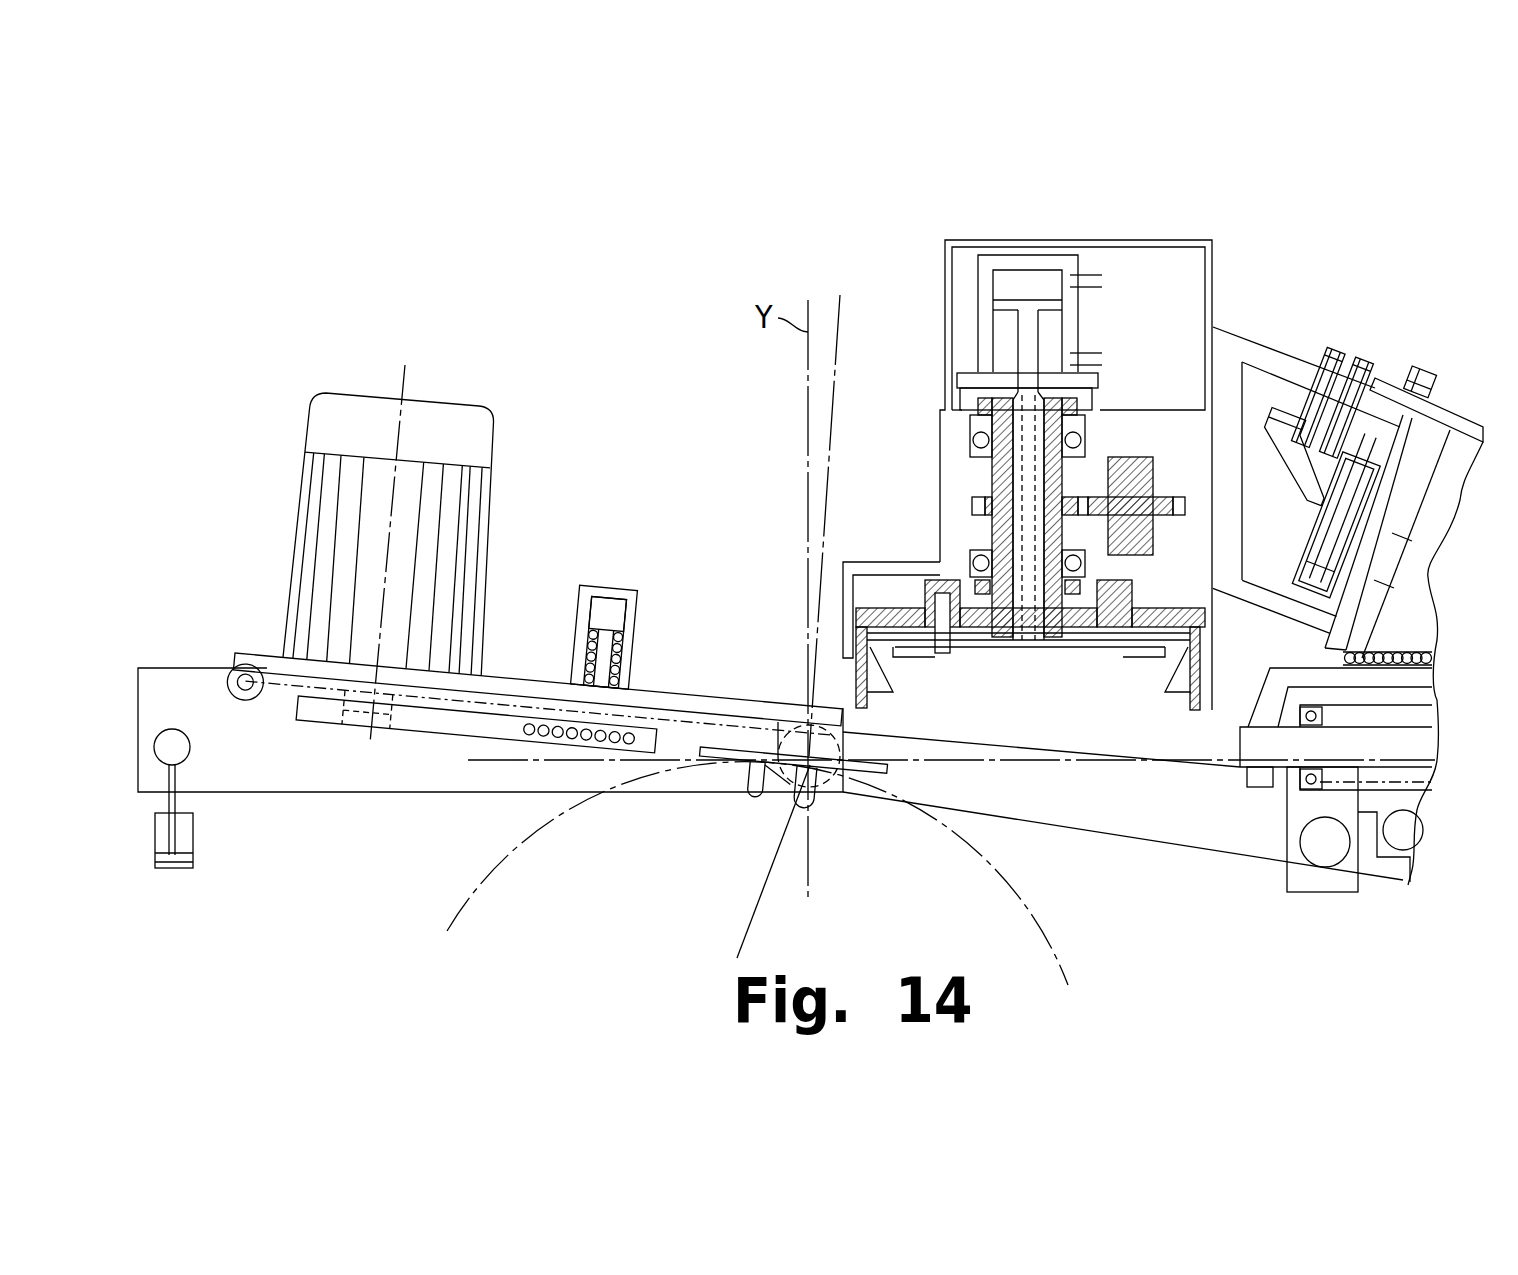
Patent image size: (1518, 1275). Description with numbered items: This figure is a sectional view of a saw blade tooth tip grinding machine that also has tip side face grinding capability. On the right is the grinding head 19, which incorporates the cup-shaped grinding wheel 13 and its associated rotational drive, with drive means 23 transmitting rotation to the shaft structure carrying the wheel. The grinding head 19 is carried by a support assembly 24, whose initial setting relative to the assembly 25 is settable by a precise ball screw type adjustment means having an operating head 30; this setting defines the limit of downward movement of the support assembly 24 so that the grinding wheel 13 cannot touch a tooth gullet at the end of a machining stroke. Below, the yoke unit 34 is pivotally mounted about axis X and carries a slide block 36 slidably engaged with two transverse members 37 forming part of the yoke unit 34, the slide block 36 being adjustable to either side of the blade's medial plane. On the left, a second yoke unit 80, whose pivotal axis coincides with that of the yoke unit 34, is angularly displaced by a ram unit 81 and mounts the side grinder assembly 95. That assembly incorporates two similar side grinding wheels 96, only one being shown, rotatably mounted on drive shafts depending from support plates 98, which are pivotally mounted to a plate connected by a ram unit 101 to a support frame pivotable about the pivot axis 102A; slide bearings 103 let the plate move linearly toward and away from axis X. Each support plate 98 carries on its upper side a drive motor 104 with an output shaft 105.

The grinding wheel 13 is at (970, 650).
The grinding head 19 is at (1027, 476).
The drive means 23 is at (1133, 457).
The support assembly 24 is at (1343, 473).
The assembly 25 is at (1405, 497).
The operating head 30 is at (1363, 408).
The yoke unit 34 is at (1103, 822).
The slide block 36 is at (1400, 855).
The transverse members 37 is at (1320, 838).
The second yoke unit 80 is at (303, 772).
The ram unit 81 is at (198, 863).
The side grinder assembly 95 is at (532, 607).
The side grinding wheels 96 is at (878, 775).
The support plates 98 is at (538, 694).
The ram unit 101 is at (604, 637).
The pivot axis 102A is at (245, 681).
The slide bearings 103 is at (579, 733).
The drive motor 104 is at (488, 506).
The output shaft 105 is at (477, 719).